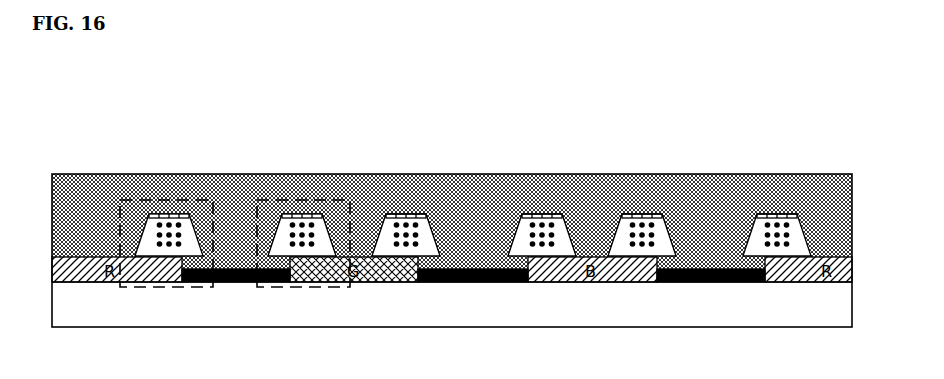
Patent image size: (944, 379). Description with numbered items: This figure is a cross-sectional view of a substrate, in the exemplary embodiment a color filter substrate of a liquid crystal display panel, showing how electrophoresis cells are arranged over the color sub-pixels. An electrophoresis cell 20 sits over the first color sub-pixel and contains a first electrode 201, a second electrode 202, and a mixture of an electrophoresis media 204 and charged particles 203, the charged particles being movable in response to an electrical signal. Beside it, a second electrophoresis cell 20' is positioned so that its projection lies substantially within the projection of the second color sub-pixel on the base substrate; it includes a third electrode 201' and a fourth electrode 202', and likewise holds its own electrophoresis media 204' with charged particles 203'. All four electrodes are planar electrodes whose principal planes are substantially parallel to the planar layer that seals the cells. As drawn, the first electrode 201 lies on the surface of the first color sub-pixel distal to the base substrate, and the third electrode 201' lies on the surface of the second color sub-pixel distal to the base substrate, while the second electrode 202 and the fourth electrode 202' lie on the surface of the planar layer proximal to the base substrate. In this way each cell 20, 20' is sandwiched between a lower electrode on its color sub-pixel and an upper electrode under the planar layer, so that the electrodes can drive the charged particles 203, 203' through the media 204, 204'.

The electrophoresis cell 20 is at (192, 284).
The second electrophoresis cell 20' is at (331, 284).
The first electrode 201 is at (163, 155).
The second electrode 202 is at (107, 188).
The charged particles 203 is at (191, 169).
The electrophoresis media 204 is at (145, 175).
The third electrode 201' is at (300, 155).
The fourth electrode 202' is at (361, 189).
The light emitting layer of adjacent pixel 203' is at (332, 168).
The bank of adjacent pixel 204' is at (284, 174).